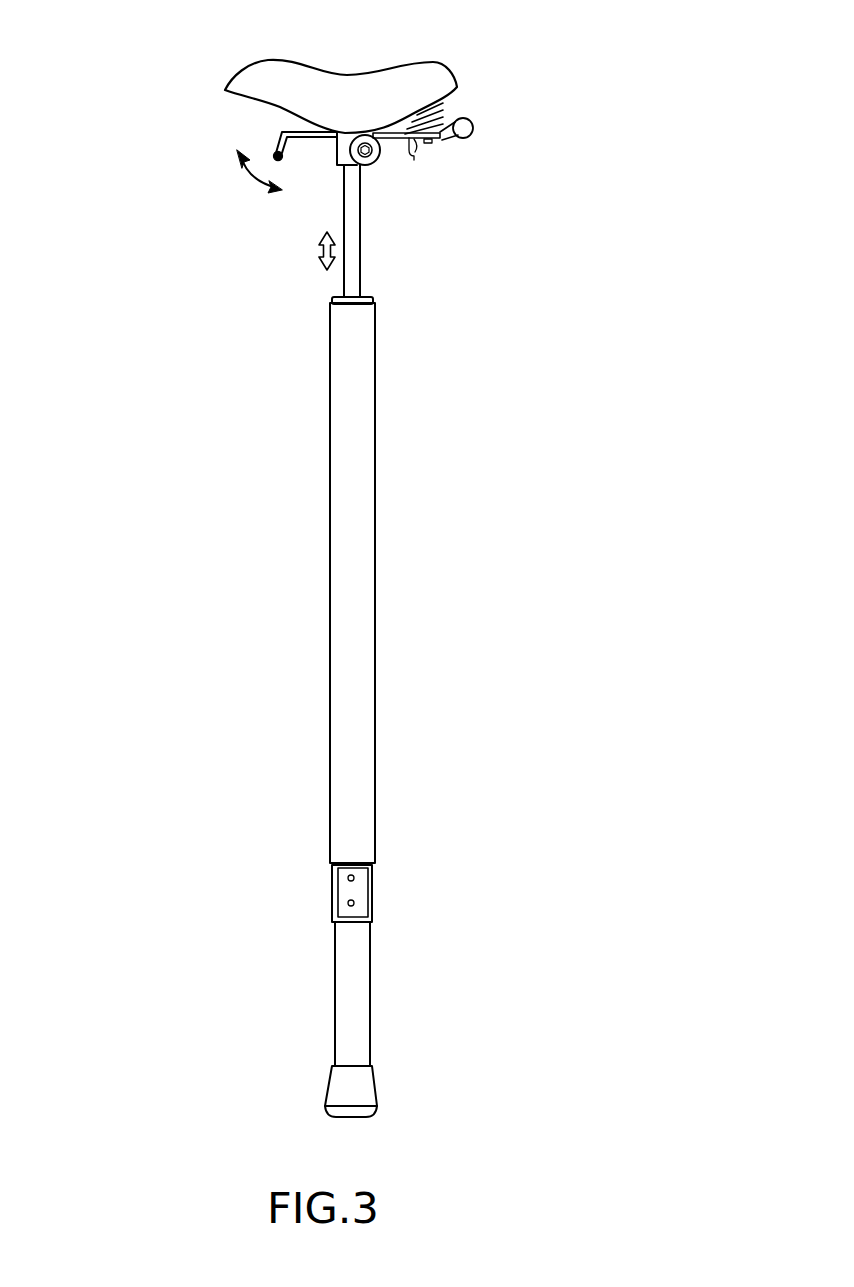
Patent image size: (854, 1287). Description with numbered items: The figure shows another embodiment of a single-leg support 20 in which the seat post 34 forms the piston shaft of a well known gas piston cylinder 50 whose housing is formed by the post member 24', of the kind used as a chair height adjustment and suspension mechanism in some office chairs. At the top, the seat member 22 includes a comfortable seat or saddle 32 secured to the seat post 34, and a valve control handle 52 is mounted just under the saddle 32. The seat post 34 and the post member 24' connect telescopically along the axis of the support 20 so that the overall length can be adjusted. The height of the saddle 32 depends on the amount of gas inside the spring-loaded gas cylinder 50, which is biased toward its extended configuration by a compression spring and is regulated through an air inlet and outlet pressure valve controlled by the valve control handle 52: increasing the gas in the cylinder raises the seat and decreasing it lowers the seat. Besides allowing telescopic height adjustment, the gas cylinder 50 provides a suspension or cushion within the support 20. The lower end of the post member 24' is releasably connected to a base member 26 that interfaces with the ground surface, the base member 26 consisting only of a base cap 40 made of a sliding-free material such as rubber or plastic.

The single-leg support 20 is at (102, 170).
The saddle 32 is at (428, 82).
The valve control handle 52 is at (277, 143).
The seat member 22 is at (357, 192).
The seat post 34 is at (357, 250).
The gas piston cylinder 50 is at (428, 412).
The post member 24' is at (404, 580).
The base member 26 is at (362, 995).
The base cap 40 is at (370, 1092).